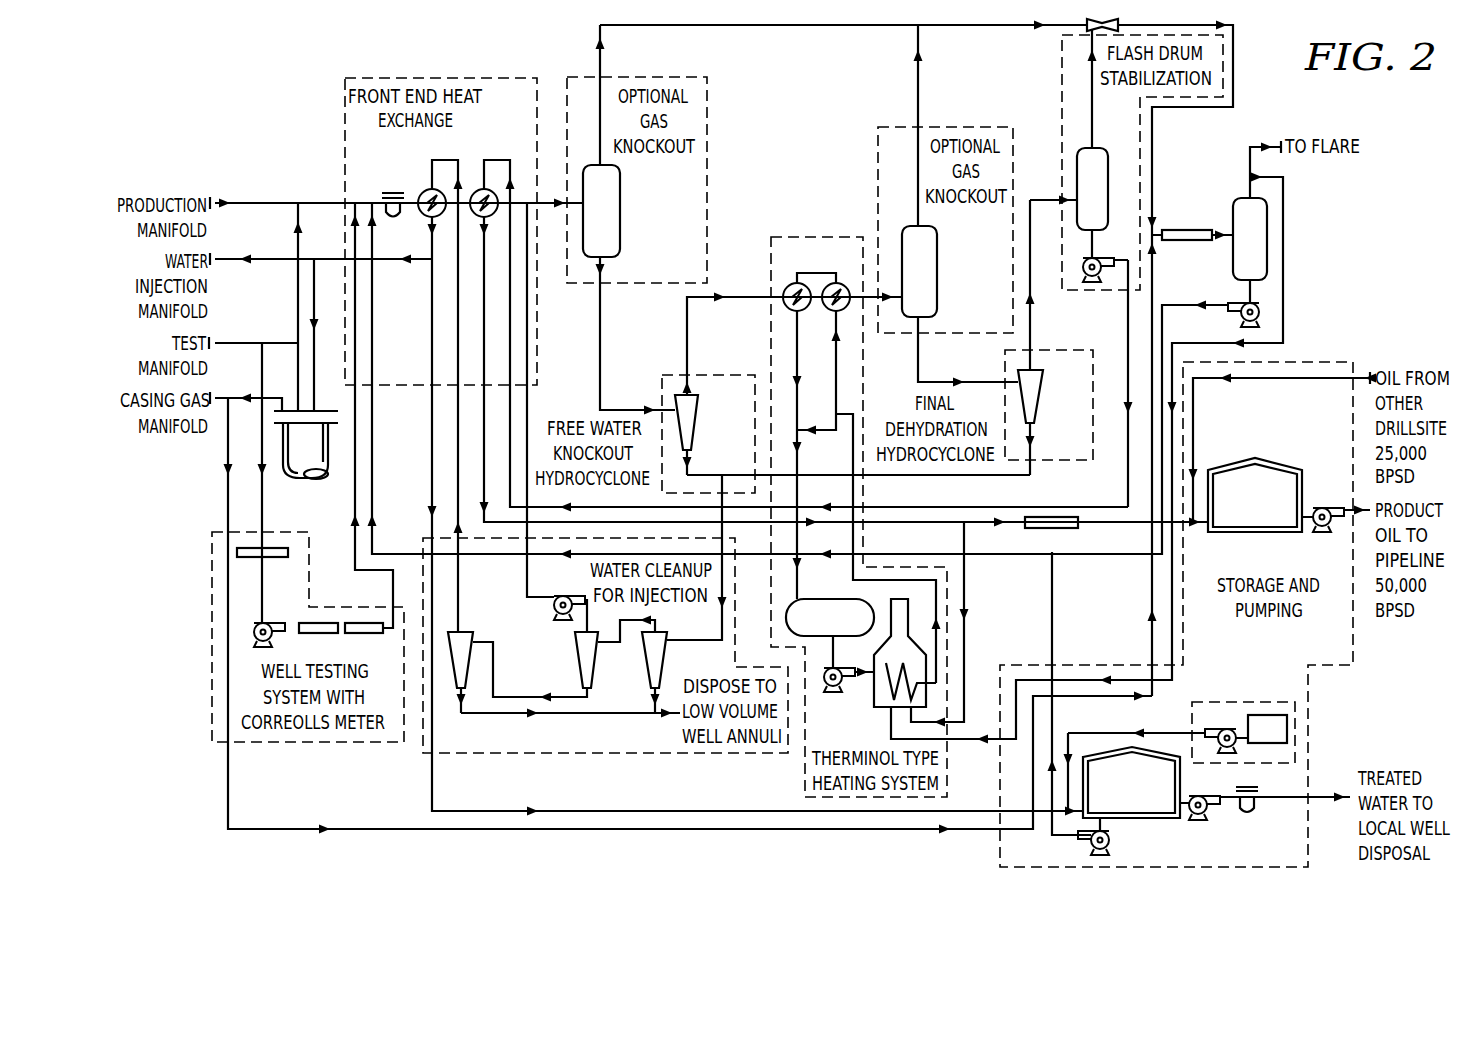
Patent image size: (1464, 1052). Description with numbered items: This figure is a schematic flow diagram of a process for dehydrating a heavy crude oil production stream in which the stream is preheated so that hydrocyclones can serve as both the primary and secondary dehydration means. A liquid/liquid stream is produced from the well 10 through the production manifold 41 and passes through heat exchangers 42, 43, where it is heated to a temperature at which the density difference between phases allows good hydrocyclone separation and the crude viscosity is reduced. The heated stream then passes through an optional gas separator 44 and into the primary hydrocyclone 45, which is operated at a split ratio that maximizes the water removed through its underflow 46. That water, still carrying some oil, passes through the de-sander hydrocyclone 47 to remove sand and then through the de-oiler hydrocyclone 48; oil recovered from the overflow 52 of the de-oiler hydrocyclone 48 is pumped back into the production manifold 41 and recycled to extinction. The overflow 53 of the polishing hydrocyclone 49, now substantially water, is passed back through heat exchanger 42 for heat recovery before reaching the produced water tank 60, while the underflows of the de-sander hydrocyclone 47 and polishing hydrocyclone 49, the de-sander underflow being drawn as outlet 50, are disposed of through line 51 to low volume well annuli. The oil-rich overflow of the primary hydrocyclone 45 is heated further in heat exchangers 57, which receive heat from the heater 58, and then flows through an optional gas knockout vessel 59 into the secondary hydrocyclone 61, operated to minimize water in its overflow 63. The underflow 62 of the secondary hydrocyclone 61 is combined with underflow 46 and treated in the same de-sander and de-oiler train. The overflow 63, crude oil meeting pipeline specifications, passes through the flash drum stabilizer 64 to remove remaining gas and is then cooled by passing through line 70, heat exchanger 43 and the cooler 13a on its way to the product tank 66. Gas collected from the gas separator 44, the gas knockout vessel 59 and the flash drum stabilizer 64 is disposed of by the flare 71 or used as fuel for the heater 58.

The well 10 is at (328, 470).
The cooler 13a is at (1052, 516).
The production manifold 41 is at (264, 201).
The heat exchanger 42 is at (421, 193).
The heat exchanger 43 is at (480, 189).
The gas separator 44 is at (613, 200).
The primary hydrocyclone 45 is at (698, 412).
The underflow 46 is at (690, 458).
The de-sander hydrocyclone 47 is at (668, 650).
The de-oiler hydrocyclone 48 is at (575, 650).
The polishing hydrocyclone 49 is at (465, 636).
The hydrocyclone underflow line 50 is at (652, 695).
The line 51 is at (660, 714).
The overflow 52 is at (530, 408).
The overflow 53 is at (433, 493).
The heat exchanger 57 is at (838, 283).
The heater 58 is at (876, 706).
The gas knockout vessel 59 is at (932, 262).
The produced water tank 60 is at (1147, 803).
The secondary hydrocyclone 61 is at (1043, 375).
The underflow 62 is at (1033, 440).
The overflow 63 is at (1033, 333).
The flash drum stabilizer 64 is at (1095, 148).
The product tank 66 is at (1270, 513).
The line 70 is at (1120, 506).
The flare 71 is at (1254, 146).